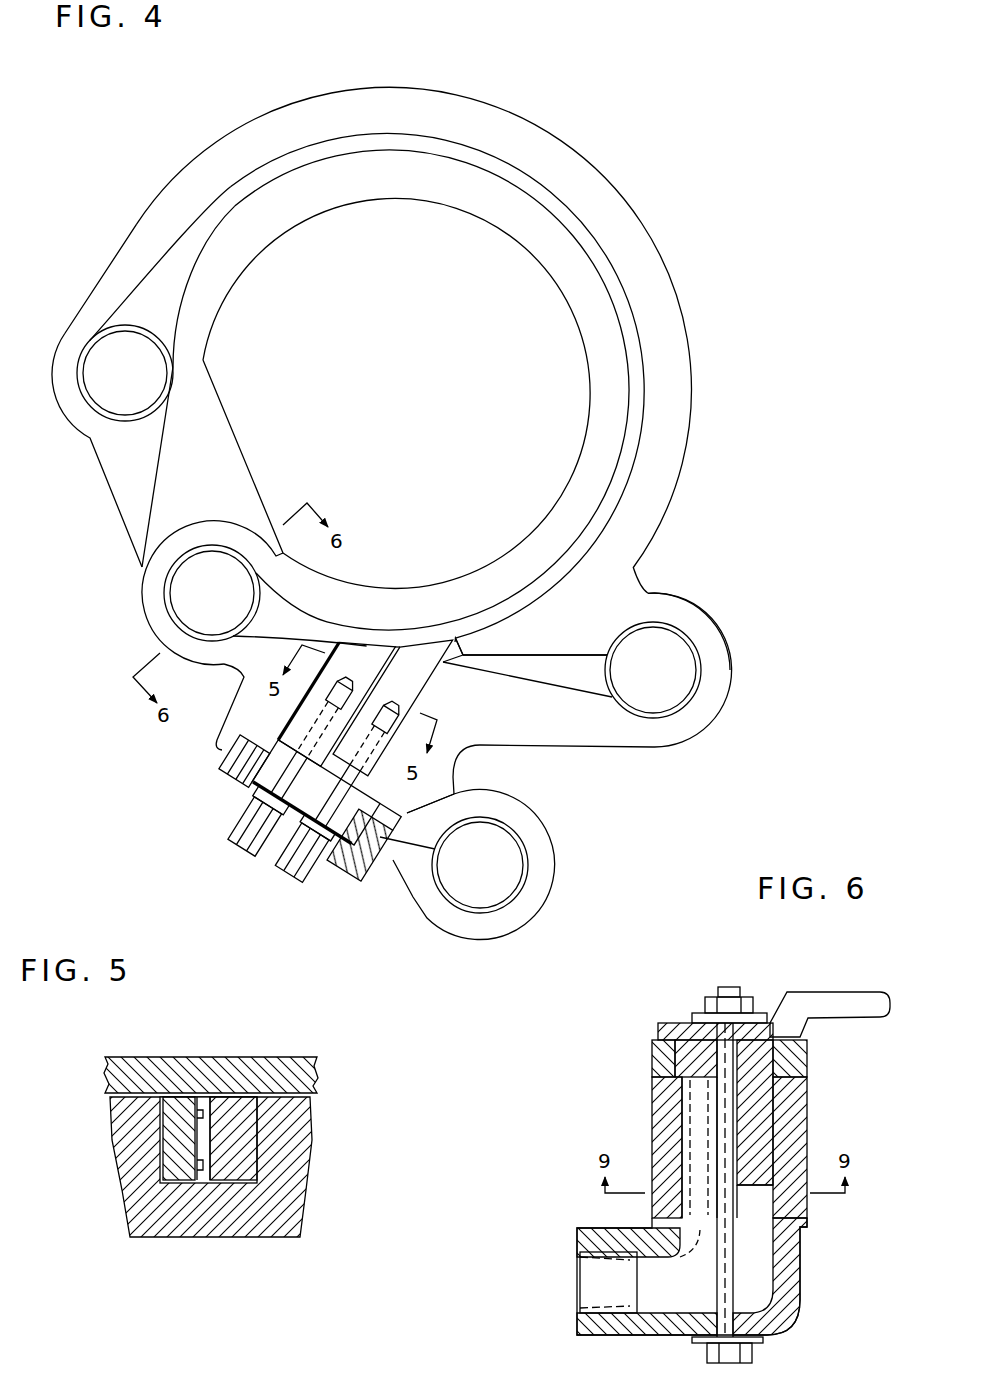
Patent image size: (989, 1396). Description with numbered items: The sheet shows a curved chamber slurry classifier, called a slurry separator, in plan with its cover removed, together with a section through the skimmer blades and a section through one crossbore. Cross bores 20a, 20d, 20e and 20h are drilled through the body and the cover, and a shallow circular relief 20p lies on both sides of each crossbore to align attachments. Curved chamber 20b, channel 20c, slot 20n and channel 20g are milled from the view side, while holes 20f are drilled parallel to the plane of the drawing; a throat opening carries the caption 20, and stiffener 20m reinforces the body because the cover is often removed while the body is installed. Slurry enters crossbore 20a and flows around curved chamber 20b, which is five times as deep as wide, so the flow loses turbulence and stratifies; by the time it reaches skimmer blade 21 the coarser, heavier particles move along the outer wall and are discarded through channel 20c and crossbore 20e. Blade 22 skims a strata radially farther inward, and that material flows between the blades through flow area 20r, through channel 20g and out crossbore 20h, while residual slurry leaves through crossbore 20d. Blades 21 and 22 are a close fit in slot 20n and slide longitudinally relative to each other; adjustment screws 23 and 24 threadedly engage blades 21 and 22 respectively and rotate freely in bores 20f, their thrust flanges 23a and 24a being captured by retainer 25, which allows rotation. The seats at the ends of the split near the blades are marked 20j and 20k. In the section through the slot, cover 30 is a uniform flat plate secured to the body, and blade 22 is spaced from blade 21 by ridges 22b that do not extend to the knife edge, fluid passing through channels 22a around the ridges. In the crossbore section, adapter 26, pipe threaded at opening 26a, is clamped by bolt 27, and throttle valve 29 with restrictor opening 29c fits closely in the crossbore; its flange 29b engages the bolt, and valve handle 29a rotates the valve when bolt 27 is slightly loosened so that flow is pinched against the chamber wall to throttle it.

In FIG. 4, the throat opening caption 20 is at (568, 327).
In FIG. 4, the crossbore 20a is at (125, 373).
In FIG. 4, the curved chamber 20b is at (590, 237).
In FIG. 4, the channel 20c is at (535, 667).
In FIG. 4, the crossbore 20d is at (212, 593).
In FIG. 6, the crossbore 20d is at (760, 1207).
In FIG. 4, the crossbore 20e is at (653, 670).
In FIG. 4, the holes 20f is at (377, 853).
In FIG. 4, the channel 20g is at (430, 815).
In FIG. 4, the crossbore 20h is at (480, 865).
In FIG. 4, the split end 20j is at (457, 643).
In FIG. 4, the split end 20k is at (402, 645).
In FIG. 4, the stiffener 20m is at (176, 467).
In FIG. 4, the slot 20n is at (430, 685).
In FIG. 5, the slot 20n is at (158, 1130).
In FIG. 4, the circular relief 20p is at (687, 638).
In FIG. 4, the flow area 20r is at (245, 765).
In FIG. 4, the skimmer blade 21 is at (393, 696).
In FIG. 5, the skimmer blade 21 is at (177, 1167).
In FIG. 4, the skimmer blade 22 is at (336, 693).
In FIG. 5, the skimmer blade 22 is at (237, 1123).
In FIG. 5, the channels 22a is at (205, 1142).
In FIG. 5, the ridges 22b is at (205, 1173).
In FIG. 4, the adjustment screw 23 is at (300, 875).
In FIG. 4, the thrust flange 23a is at (337, 855).
In FIG. 4, the adjustment screw 24 is at (258, 850).
In FIG. 4, the thrust flange 24a is at (243, 808).
In FIG. 4, the retainer 25 is at (355, 860).
In FIG. 6, the adapter 26 is at (808, 1305).
In FIG. 6, the opening 26a is at (608, 1282).
In FIG. 6, the bolt 27 is at (717, 1275).
In FIG. 6, the throttle valve 29 is at (777, 1140).
In FIG. 6, the valve handle 29a is at (862, 990).
In FIG. 6, the flange 29b is at (658, 1023).
In FIG. 6, the restrictor opening 29c is at (705, 1110).
In FIG. 5, the cover 30 is at (158, 1058).
In FIG. 6, the cover 30 is at (652, 1050).